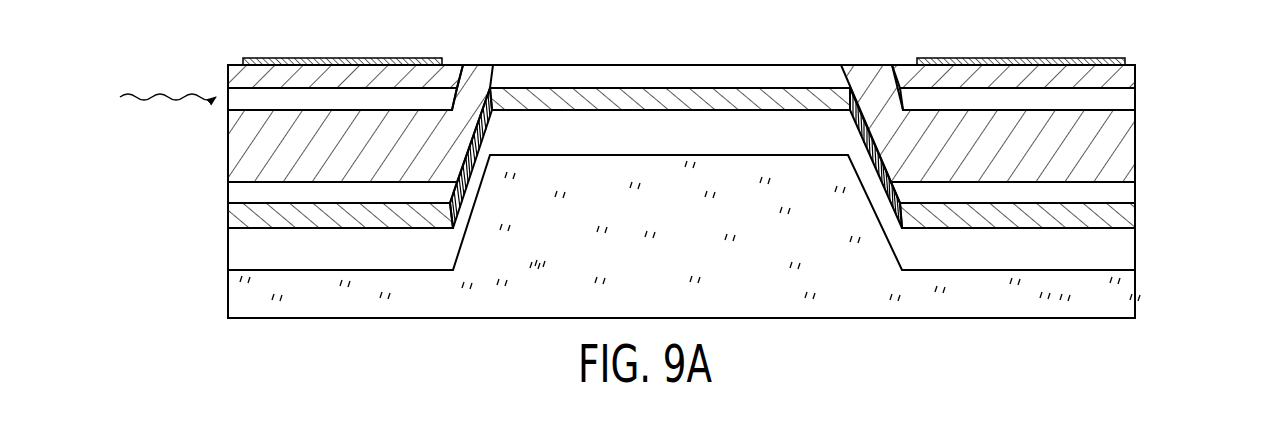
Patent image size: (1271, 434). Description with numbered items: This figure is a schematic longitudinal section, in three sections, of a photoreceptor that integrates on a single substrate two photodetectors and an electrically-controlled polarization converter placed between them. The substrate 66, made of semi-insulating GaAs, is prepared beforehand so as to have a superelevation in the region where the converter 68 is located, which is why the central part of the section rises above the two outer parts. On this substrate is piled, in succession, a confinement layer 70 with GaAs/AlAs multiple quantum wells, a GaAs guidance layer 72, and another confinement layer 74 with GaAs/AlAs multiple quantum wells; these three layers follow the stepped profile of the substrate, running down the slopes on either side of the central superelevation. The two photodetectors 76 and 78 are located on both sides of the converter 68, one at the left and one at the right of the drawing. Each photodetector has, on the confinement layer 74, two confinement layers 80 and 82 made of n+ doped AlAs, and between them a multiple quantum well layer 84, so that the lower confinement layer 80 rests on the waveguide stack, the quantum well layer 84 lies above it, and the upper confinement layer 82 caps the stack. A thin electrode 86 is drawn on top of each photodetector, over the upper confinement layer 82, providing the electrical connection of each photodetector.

The substrate 66 is at (1122, 297).
The converter 68 is at (694, 62).
The confinement layer 70 is at (240, 262).
The guidance layer 72 is at (238, 220).
The confinement layer 74 is at (240, 193).
The photodetector 76 is at (407, 44).
The photodetector 78 is at (1075, 54).
The confinement layer 80 is at (243, 150).
The confinement layer 82 is at (226, 78).
The multiple quantum well layer 84 is at (232, 105).
The electrode 86 is at (322, 59).